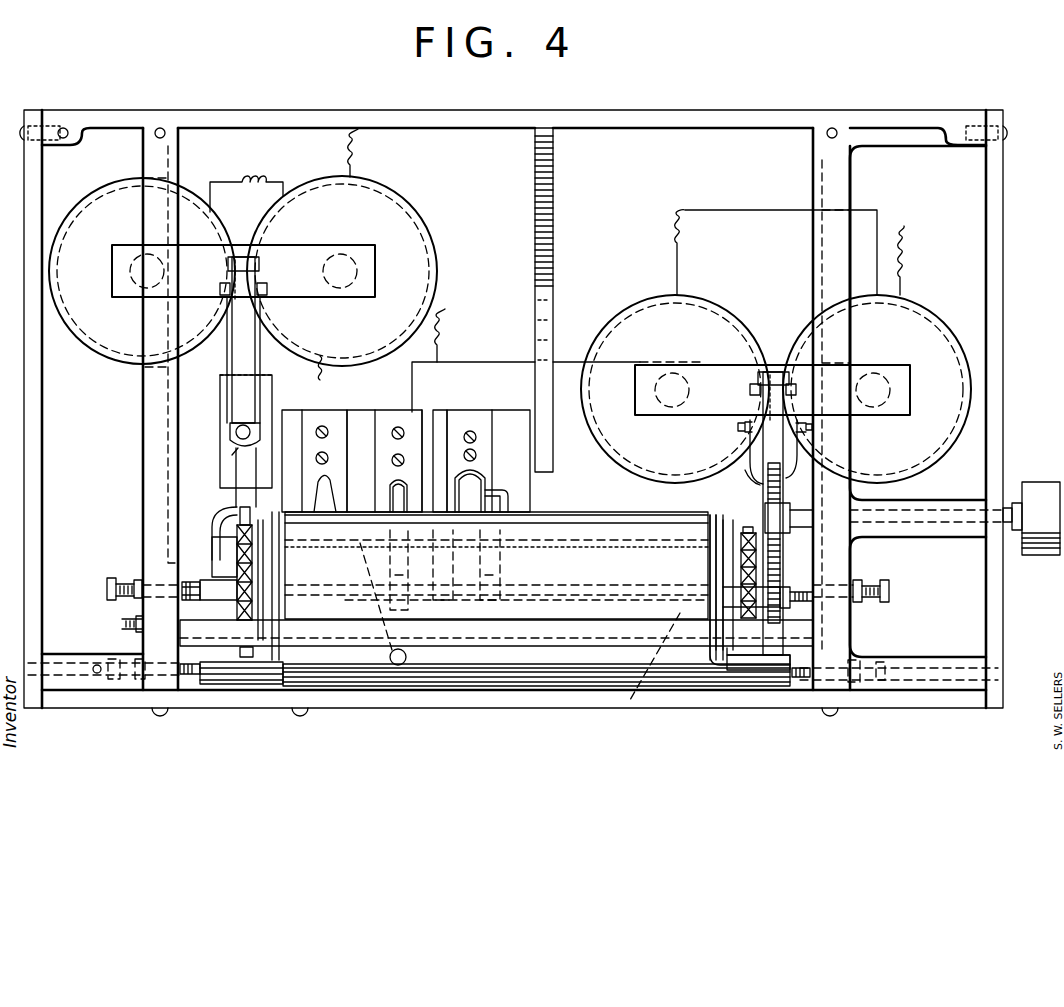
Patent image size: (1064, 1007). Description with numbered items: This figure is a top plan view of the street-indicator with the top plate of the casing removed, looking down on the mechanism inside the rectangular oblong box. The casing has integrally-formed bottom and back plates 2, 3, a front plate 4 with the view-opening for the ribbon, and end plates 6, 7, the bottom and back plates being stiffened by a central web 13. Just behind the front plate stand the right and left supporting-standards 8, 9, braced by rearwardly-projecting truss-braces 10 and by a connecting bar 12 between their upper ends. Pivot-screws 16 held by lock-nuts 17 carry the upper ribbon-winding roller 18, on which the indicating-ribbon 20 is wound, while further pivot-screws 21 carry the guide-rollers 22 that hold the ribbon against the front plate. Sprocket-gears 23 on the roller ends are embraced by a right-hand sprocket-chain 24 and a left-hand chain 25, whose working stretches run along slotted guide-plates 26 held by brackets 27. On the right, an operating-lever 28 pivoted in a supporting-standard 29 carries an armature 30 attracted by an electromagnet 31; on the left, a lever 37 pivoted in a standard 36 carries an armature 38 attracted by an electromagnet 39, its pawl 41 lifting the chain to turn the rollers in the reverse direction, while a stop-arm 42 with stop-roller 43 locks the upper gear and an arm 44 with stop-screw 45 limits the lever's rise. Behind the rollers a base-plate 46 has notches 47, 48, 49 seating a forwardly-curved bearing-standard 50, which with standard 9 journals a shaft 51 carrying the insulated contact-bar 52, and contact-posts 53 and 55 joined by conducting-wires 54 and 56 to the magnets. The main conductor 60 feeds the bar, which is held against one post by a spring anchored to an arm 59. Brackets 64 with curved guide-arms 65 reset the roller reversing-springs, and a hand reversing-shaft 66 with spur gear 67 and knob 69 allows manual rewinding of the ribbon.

The bottom plate 2 is at (513, 413).
The back plate 3 is at (632, 116).
The front plate 4 is at (568, 698).
The end plate 6 is at (1005, 386).
The end plate 7 is at (26, 428).
The right supporting-standard 8 is at (846, 650).
The left supporting-standard 9 is at (152, 630).
The truss-braces 10 is at (150, 416).
The connecting bar or brace 12 is at (580, 628).
The web 13 is at (545, 195).
The pivot-screws 16 is at (110, 578).
The lock-nuts 17 is at (138, 578).
The upper ribbon-winding roller 18 is at (625, 708).
The indicating-ribbon 20 is at (497, 586).
The pivot-screws 21 is at (128, 678).
The guide-rollers 22 is at (254, 684).
The sprocket-gears 23 is at (253, 584).
The sprocket-chain 24 is at (740, 545).
The chain 25 is at (248, 594).
The guide-plates 26 is at (228, 540).
The brackets 27 is at (762, 657).
The operating-lever 28 is at (800, 455).
The supporting-standard 29 is at (792, 482).
The armature 30 is at (772, 390).
The electromagnet 31 is at (675, 389).
The supporting-standard 36 is at (230, 436).
The left-hand operating-lever 37 is at (238, 462).
The armature 38 is at (243, 271).
The electromagnet 39 is at (323, 247).
The pawl or dog 41 is at (252, 505).
The stop-arm 42 is at (215, 558).
The stop-roller 43 is at (200, 590).
The upwardly-projecting arm 44 is at (236, 424).
The stop-screw 45 is at (236, 440).
The base-plate 46 is at (488, 448).
The seat or notch 47 is at (450, 420).
The seat or notch 48 is at (394, 425).
The seat or notch 49 is at (372, 414).
The bearing-standard 50 is at (480, 498).
The shaft 51 is at (514, 602).
The contact-bar 52 is at (388, 633).
The contact-post 53 is at (393, 492).
The conducting-wires 54 is at (738, 212).
The contact-post 55 is at (352, 548).
The conducting-wire 56 is at (332, 374).
The arm 59 is at (505, 575).
The main supply wire or conductor 60 is at (462, 320).
The brackets 64 is at (122, 625).
The guide-arms 65 is at (266, 555).
The reversing-shaft 66 is at (1010, 506).
The spur gear-wheel 67 is at (768, 478).
The operating wheel or knob 69 is at (1044, 556).